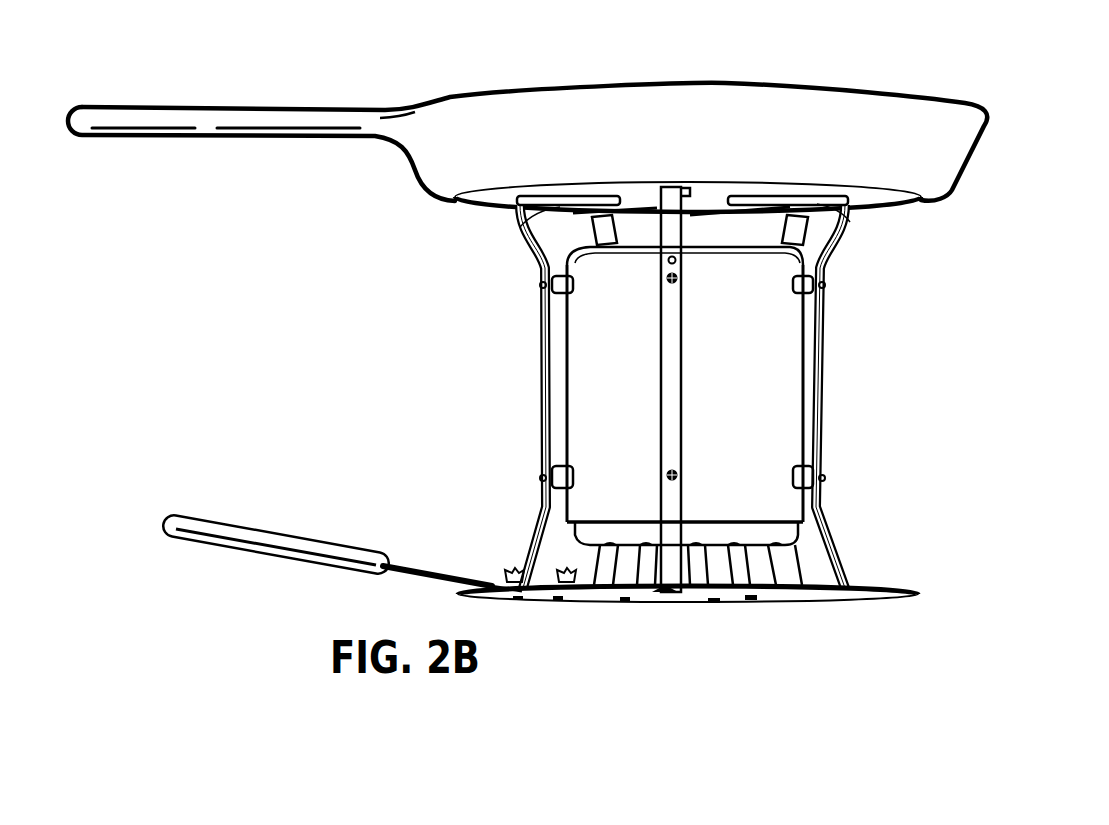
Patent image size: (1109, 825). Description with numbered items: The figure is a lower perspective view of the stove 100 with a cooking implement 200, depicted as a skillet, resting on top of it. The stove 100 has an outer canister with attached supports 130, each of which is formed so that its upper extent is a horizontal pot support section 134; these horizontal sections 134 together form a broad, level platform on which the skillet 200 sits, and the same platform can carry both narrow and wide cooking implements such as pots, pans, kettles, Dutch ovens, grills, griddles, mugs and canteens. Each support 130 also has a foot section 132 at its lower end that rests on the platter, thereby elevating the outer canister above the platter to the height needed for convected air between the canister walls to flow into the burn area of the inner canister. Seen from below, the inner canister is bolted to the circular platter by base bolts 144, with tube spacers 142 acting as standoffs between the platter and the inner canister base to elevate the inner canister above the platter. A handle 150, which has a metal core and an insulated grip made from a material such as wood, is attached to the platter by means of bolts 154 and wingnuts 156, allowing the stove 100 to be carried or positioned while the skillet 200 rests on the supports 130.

The cooking implement 200 is at (432, 94).
The stove 100 is at (445, 334).
The support 130 is at (650, 360).
The horizontal pot support section of support 134 is at (560, 207).
The foot section of support 132 is at (548, 566).
The tube spacers 142 is at (718, 570).
The base bolts 144 is at (557, 600).
The bolts for attaching handle to platter 154 is at (518, 600).
The wingnuts for attaching handle to platter 156 is at (510, 574).
The handle 150 is at (278, 515).